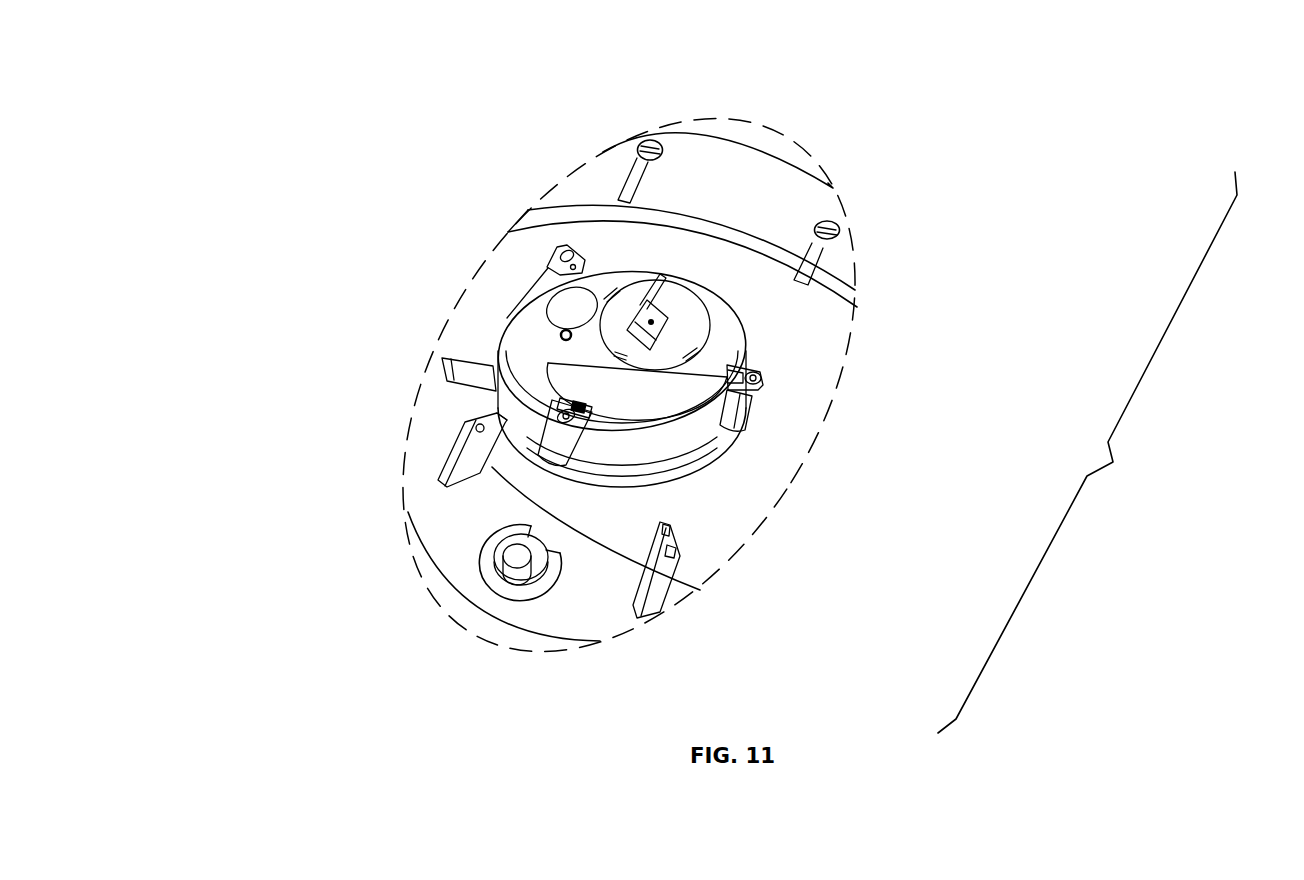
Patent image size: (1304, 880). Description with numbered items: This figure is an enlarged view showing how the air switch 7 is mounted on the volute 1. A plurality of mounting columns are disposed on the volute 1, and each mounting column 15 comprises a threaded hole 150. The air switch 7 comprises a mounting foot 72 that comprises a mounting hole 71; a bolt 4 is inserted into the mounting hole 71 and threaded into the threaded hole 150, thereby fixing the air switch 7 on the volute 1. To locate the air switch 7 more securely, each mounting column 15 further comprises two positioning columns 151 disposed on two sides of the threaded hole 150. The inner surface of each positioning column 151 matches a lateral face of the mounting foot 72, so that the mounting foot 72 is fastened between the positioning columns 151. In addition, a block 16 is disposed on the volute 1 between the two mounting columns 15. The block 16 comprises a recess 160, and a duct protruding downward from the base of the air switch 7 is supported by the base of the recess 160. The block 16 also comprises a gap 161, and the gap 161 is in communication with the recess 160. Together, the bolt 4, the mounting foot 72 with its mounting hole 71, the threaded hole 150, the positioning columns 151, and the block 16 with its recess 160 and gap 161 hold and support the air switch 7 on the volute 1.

The volute 1 is at (421, 455).
The bolt 4 is at (629, 166).
The air switch 7 is at (545, 318).
The mounting hole 71 is at (768, 374).
The mounting foot 72 is at (763, 402).
The mounting column 15 is at (676, 596).
The threaded hole 150 is at (478, 430).
The positioning column 151 is at (670, 549).
The block 16 is at (470, 584).
The recess 160 is at (510, 543).
The gap 161 is at (500, 582).